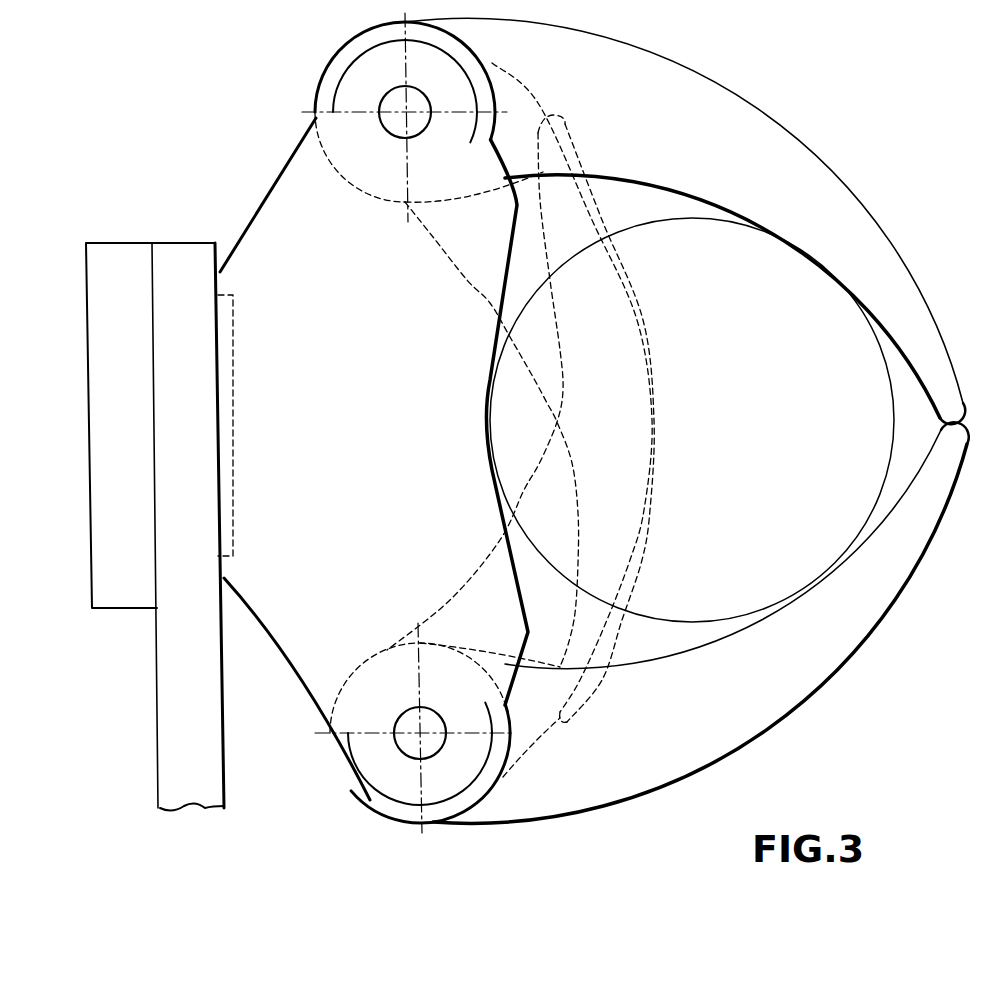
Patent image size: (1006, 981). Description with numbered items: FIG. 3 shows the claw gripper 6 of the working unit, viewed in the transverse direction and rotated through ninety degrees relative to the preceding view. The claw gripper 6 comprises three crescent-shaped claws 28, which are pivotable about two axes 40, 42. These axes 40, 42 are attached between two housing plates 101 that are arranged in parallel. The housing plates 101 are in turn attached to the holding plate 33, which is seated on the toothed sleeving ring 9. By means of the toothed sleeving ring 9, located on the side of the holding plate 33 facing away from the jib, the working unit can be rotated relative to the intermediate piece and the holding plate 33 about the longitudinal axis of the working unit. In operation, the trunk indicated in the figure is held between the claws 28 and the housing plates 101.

The claw gripper 6 is at (917, 115).
The toothed sleeving ring 9 is at (118, 345).
The claws 28 is at (722, 122).
The holding plate 33 is at (180, 742).
The axis 40 is at (404, 112).
The axis 42 is at (420, 733).
The housing plates 101 is at (265, 196).